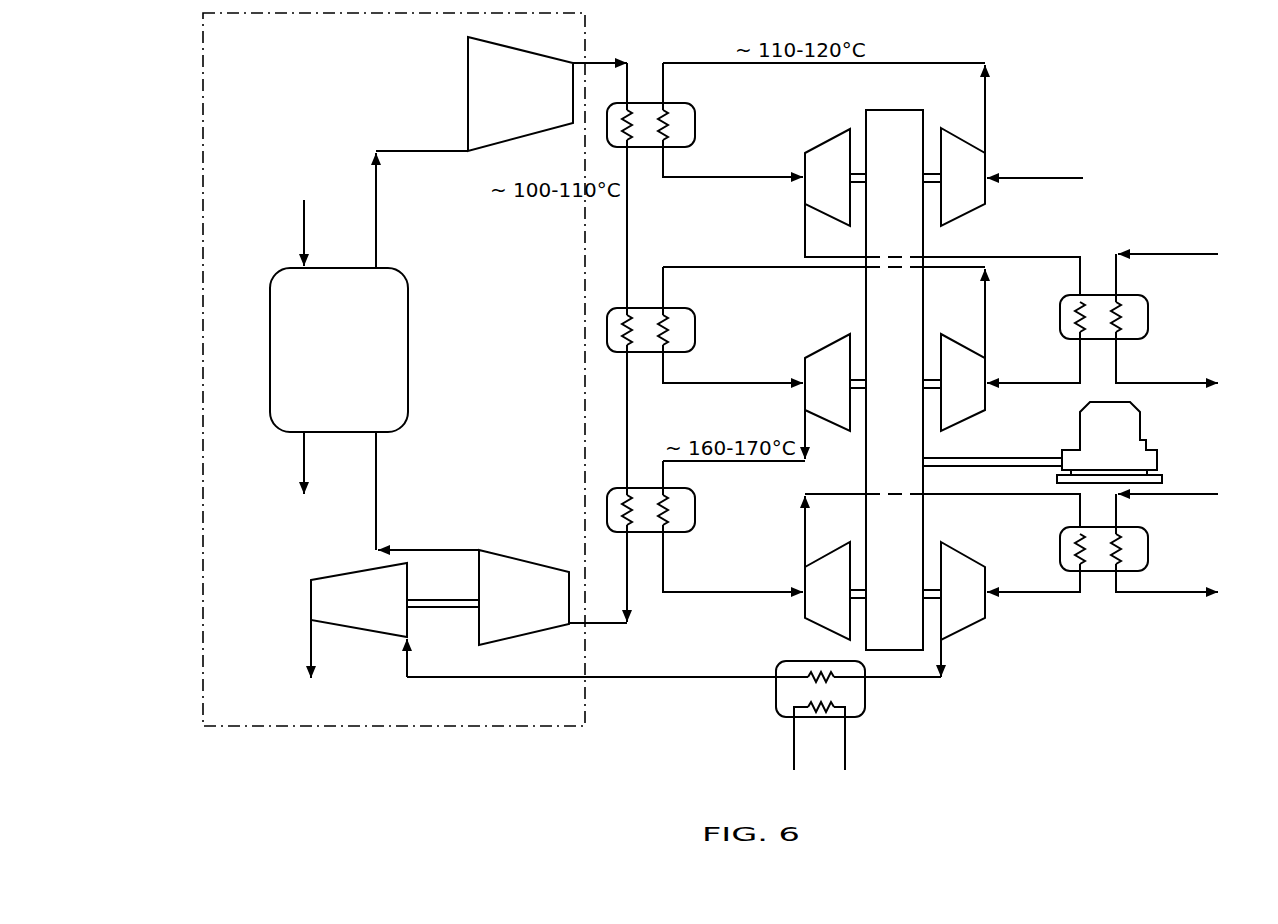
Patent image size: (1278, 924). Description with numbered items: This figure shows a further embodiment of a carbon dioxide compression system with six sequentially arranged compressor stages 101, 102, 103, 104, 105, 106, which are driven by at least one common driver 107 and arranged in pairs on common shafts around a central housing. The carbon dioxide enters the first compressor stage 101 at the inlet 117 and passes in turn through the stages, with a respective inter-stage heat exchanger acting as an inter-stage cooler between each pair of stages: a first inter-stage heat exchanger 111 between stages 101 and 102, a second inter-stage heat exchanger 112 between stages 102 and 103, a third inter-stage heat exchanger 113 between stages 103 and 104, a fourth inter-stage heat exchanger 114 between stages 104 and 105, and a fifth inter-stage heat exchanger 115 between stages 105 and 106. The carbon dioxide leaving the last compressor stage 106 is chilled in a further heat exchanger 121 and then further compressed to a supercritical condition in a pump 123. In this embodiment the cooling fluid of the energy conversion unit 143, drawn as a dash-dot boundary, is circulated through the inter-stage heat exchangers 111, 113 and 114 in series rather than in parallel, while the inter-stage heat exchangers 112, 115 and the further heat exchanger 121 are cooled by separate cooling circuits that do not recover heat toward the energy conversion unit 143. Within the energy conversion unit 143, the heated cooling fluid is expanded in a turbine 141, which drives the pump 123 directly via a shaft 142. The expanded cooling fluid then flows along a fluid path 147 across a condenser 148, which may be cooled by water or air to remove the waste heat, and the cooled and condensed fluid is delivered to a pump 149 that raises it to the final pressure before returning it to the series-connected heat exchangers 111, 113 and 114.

The first compressor stage 101 is at (958, 148).
The second compressor stage 102 is at (827, 150).
The third compressor stage 103 is at (958, 355).
The fourth compressor stage 104 is at (827, 356).
The fifth compressor stage 105 is at (830, 565).
The sixth compressor stage 106 is at (965, 565).
The common driver 107 is at (1137, 424).
The first inter-stage heat exchanger 111 is at (695, 127).
The second inter-stage heat exchanger 112 is at (1148, 325).
The third inter-stage heat exchanger 113 is at (695, 332).
The fourth inter-stage heat exchanger 114 is at (695, 517).
The fifth inter-stage heat exchanger 115 is at (1148, 557).
The carbon dioxide inlet 117 is at (1065, 176).
The further heat exchanger 121 is at (786, 660).
The pump 123 is at (355, 567).
The turbine 141 is at (522, 565).
The shaft 142 is at (443, 608).
The energy conversion unit 143 is at (280, 729).
The fluid path 147 is at (380, 200).
The condenser 148 is at (410, 365).
The pump 149 is at (468, 61).